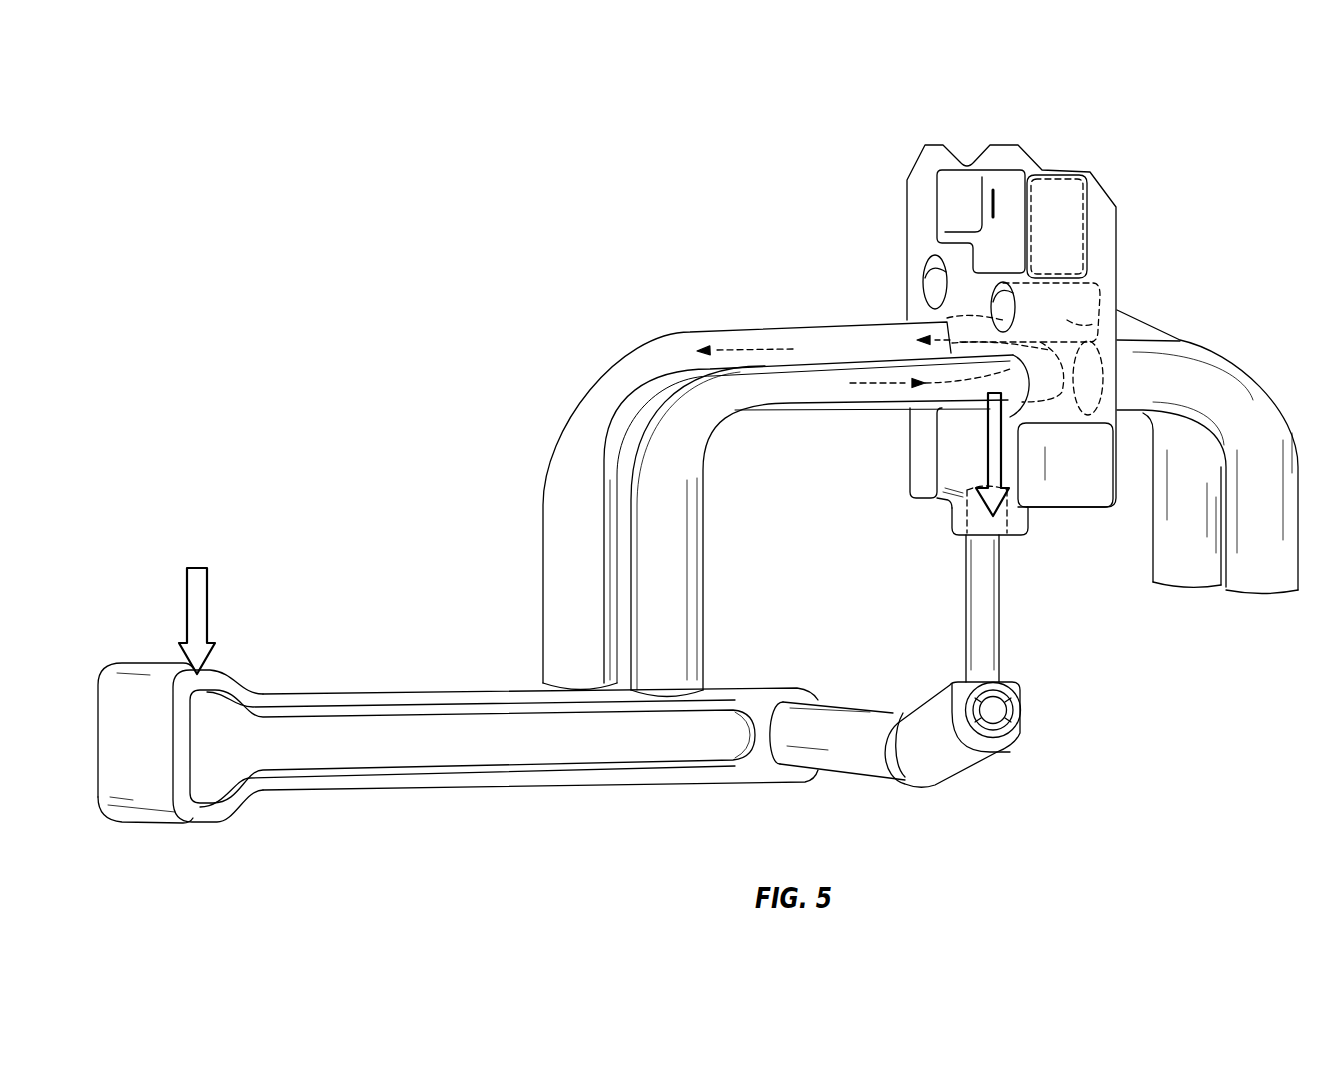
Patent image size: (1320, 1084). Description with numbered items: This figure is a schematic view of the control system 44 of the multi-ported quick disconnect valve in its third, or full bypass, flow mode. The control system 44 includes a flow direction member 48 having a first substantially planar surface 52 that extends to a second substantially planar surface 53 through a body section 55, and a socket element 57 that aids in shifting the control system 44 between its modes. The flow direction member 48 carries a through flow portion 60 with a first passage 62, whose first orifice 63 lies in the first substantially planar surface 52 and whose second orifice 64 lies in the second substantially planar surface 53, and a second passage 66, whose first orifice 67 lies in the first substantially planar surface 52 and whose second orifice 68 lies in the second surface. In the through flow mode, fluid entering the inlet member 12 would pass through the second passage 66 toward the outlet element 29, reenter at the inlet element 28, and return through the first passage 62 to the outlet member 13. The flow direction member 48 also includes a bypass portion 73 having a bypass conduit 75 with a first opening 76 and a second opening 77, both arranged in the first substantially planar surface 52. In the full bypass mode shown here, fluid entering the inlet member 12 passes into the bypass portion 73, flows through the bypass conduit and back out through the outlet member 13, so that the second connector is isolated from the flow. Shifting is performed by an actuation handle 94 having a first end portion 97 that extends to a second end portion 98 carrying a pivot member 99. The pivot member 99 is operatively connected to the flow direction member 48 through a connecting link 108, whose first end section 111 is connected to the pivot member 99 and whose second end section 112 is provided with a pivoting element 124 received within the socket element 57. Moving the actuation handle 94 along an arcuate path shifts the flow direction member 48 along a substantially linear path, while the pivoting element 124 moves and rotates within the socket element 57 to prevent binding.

The inlet member 12 is at (693, 663).
The outlet member 13 is at (547, 642).
The inlet element 28 is at (1185, 577).
The outlet element 29 is at (1252, 585).
The control system 44 is at (860, 207).
The flow direction member 48 is at (1103, 223).
The first substantially planar surface 52 is at (915, 243).
The second substantially planar surface 53 is at (1118, 255).
The body section 55 is at (1057, 420).
The socket element 57 is at (952, 515).
The through flow portion 60 is at (905, 288).
The first passage 62 is at (955, 263).
The first orifice 63 is at (937, 255).
The second orifice 64 is at (1040, 168).
The second passage 66 is at (1097, 342).
The first orifice 67 is at (1003, 287).
The second orifice 68 is at (1102, 297).
The bypass portion 73 is at (1038, 414).
The bypass conduit 75 is at (1063, 420).
The first opening 76 is at (917, 340).
The second opening 77 is at (1023, 408).
The actuation handle 94 is at (460, 817).
The first end portion 97 is at (167, 676).
The second end portion 98 is at (794, 783).
The pivot member 99 is at (903, 807).
The connecting link 108 is at (1020, 630).
The first end section 111 is at (955, 752).
The second end section 112 is at (968, 520).
The pivoting element 124 is at (1025, 535).